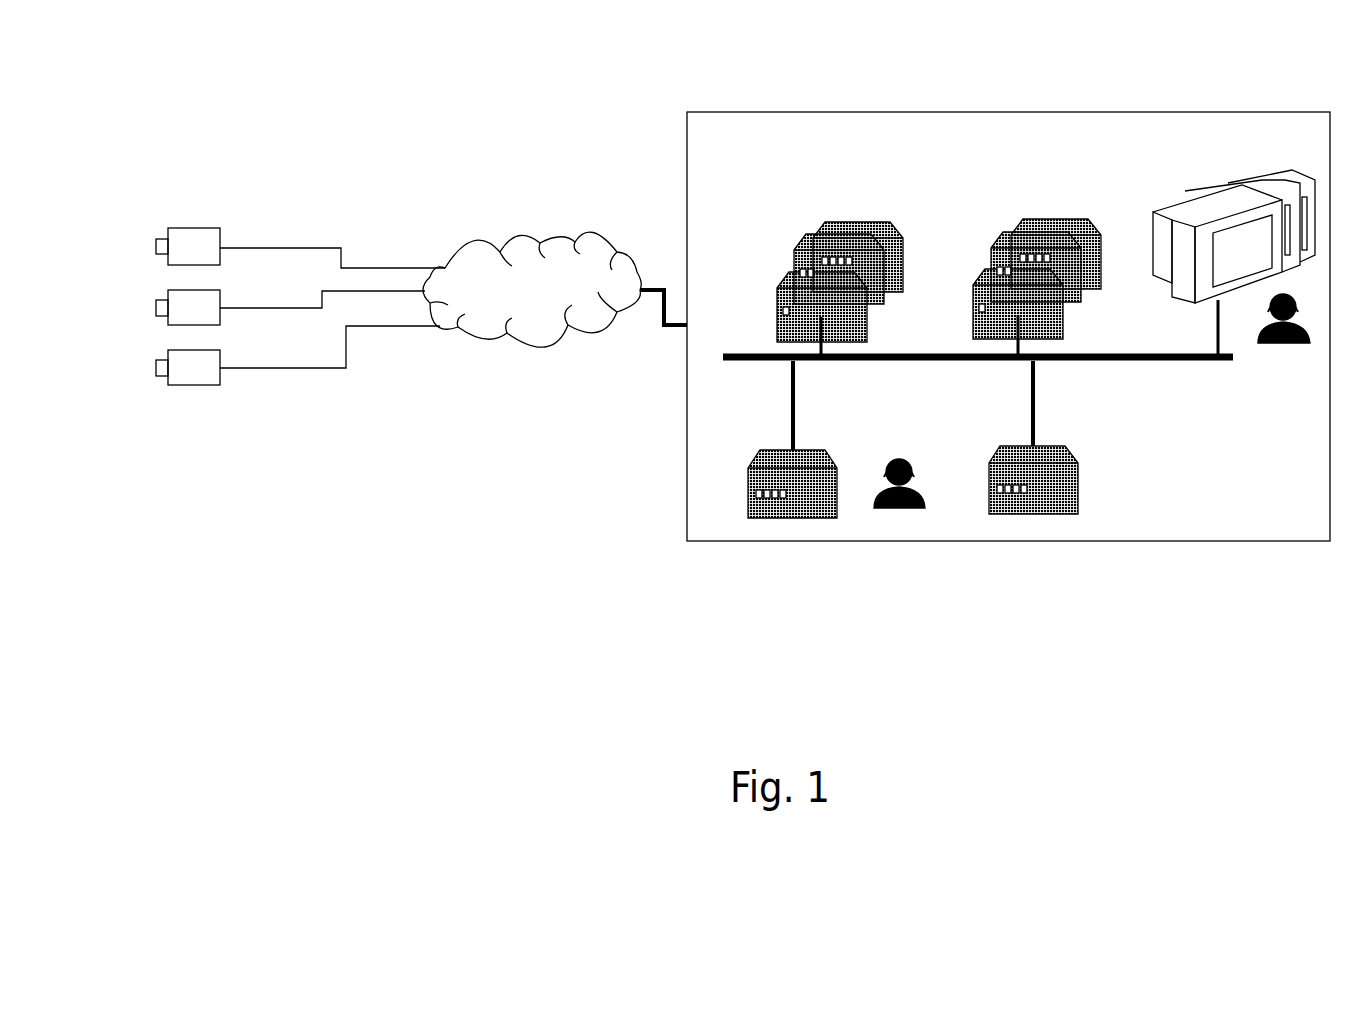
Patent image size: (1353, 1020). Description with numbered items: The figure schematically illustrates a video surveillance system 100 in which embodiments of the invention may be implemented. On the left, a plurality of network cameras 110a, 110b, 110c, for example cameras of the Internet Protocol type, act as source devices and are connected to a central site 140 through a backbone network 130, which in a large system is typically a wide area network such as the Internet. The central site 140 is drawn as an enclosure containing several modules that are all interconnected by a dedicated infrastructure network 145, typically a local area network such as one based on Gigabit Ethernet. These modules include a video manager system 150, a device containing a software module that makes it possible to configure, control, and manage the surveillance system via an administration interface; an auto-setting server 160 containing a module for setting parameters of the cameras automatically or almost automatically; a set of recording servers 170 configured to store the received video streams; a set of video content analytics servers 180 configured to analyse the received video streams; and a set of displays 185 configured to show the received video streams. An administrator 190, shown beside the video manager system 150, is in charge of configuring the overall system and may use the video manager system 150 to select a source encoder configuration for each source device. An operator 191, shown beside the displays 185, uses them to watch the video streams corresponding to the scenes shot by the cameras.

The video surveillance system 100 is at (383, 105).
The network camera 110a is at (155, 243).
The network camera 110b is at (155, 312).
The network camera 110c is at (155, 371).
The backbone network 130 is at (547, 236).
The central site 140 is at (910, 112).
The dedicated infrastructure network 145 is at (1095, 363).
The video manager system 150 is at (775, 452).
The auto-setting server 160 is at (1080, 478).
The recording servers 170 is at (805, 237).
The video content analytics servers 180 is at (1002, 234).
The displays 185 is at (1172, 208).
The administrator 190 is at (905, 457).
The operator 191 is at (1285, 345).